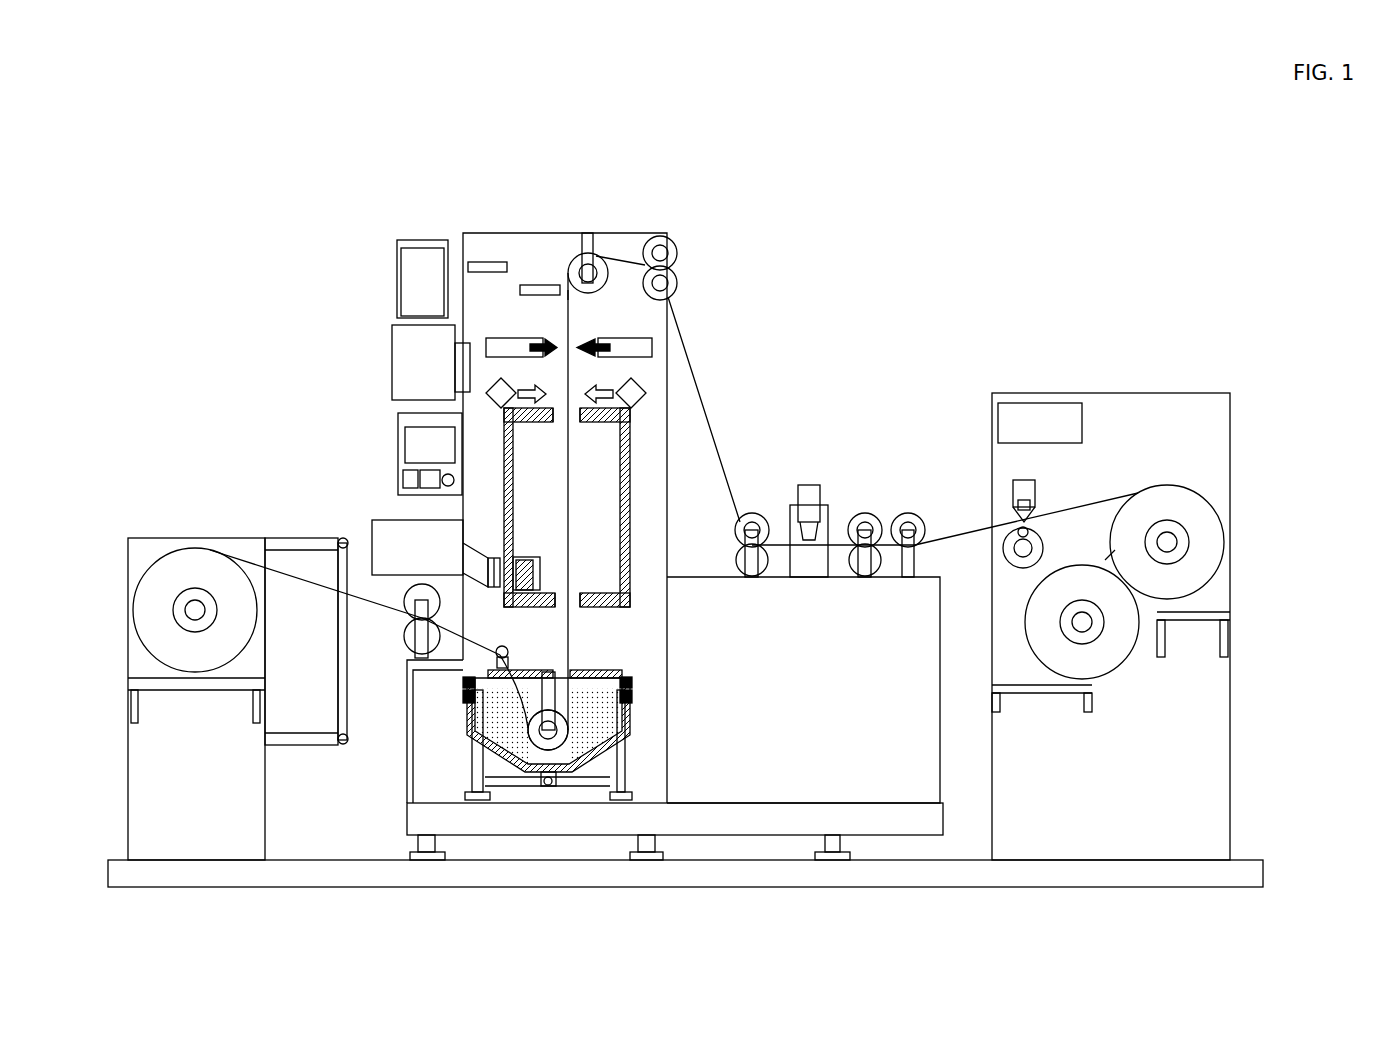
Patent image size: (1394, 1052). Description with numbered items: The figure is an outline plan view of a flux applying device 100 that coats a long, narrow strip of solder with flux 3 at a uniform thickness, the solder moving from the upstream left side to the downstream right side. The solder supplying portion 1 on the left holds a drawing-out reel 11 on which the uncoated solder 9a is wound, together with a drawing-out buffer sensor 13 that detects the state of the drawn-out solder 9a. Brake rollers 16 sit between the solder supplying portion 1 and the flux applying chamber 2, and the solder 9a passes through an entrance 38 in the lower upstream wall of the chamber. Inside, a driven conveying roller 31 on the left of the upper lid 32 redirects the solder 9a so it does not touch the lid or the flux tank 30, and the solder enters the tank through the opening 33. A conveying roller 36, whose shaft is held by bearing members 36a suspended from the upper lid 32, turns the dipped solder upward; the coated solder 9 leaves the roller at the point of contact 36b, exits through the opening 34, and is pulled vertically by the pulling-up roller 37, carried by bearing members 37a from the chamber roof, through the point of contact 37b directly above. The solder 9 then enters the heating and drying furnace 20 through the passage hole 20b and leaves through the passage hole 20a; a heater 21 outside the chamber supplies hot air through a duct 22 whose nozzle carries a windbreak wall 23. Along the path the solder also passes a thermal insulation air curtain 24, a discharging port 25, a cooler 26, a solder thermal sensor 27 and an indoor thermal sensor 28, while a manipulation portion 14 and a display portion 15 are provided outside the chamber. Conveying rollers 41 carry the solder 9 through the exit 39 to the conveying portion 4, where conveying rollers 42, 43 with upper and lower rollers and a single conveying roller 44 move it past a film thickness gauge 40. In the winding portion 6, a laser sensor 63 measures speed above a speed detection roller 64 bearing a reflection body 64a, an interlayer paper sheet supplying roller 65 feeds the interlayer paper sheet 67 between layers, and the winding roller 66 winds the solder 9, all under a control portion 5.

The flux applying device 100 is at (298, 212).
The solder supplying portion 1 is at (205, 862).
The flux applying chamber 2 is at (622, 836).
The flux 3 is at (577, 740).
The conveying portion 4 is at (866, 465).
The control portion 5 is at (1030, 408).
The winding portion 6 is at (1090, 862).
The solder 9 is at (569, 445).
The solder 9a is at (305, 581).
The drawing-out reel 11 is at (207, 668).
The drawing-out buffer sensor 13 is at (338, 748).
The manipulation portion 14 is at (403, 480).
The display portion 15 is at (405, 445).
The brake rollers 16 is at (405, 630).
The heating and drying furnace 20 is at (627, 542).
The passage hole 20a is at (573, 413).
The passage hole 20b is at (573, 590).
The heater 21 is at (372, 537).
The duct 22 is at (483, 560).
The windbreak wall 23 is at (535, 557).
The thermal insulation air curtain 24 is at (498, 404).
The discharging port 25 is at (400, 276).
The cooler 26 is at (495, 338).
The solder thermal sensor 27 is at (537, 285).
The indoor thermal sensor 28 is at (478, 262).
The flux tank 30 is at (610, 722).
The driven conveying roller 31 is at (505, 648).
The upper lid 32 is at (468, 676).
The opening 33 is at (518, 672).
The opening 34 is at (568, 672).
The conveying roller 36 is at (543, 748).
The bearing members 36a is at (550, 705).
The point of contact 36b is at (567, 735).
The pulling-up roller 37 is at (593, 247).
The bearing members 37a is at (584, 240).
The point of contact 37b is at (567, 260).
The entrance 38 is at (463, 634).
The exit 39 is at (672, 293).
The film thickness gauge 40 is at (811, 485).
The conveying rollers 41 is at (683, 250).
The conveying roller 42 is at (755, 508).
The conveying roller 43 is at (868, 514).
The conveying roller 44 is at (912, 514).
The laser sensor 63 is at (1013, 490).
The speed detection roller 64 is at (1008, 565).
The reflection body 64a is at (1016, 530).
The interlayer paper sheet supplying roller 65 is at (1110, 680).
The winding roller 66 is at (1183, 487).
The interlayer paper sheet 67 is at (1100, 560).